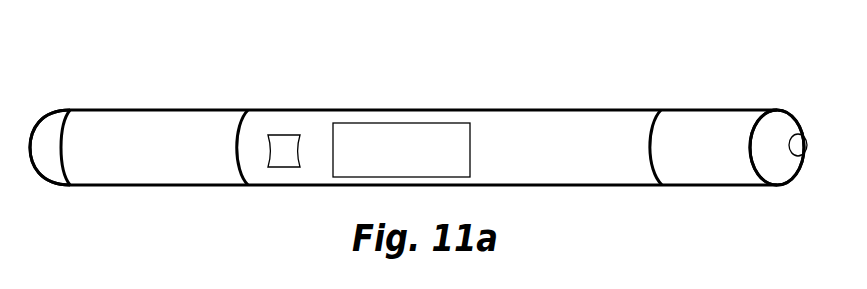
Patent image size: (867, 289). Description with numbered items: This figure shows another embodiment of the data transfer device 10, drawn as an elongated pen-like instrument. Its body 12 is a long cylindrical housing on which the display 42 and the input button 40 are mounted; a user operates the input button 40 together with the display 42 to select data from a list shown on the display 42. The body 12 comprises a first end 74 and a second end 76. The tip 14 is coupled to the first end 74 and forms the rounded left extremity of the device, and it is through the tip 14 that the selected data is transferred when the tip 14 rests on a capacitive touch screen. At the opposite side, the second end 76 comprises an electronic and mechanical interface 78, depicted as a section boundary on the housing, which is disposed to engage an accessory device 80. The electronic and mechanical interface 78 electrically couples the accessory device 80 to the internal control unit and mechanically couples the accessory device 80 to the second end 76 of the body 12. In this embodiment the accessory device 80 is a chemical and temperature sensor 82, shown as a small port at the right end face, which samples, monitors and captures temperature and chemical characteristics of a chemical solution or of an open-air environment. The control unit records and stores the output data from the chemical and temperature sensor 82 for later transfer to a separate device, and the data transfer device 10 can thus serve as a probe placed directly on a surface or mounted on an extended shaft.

The data transfer device 10 is at (469, 109).
The body 12 is at (530, 121).
The tip 14 is at (37, 113).
The input button 40 is at (284, 143).
The display 42 is at (403, 148).
The first end 74 is at (180, 137).
The second end 76 is at (607, 123).
The electronic and mechanical interface 78 is at (660, 110).
The accessory device 80 is at (745, 118).
The chemical and temperature sensor 82 is at (797, 149).